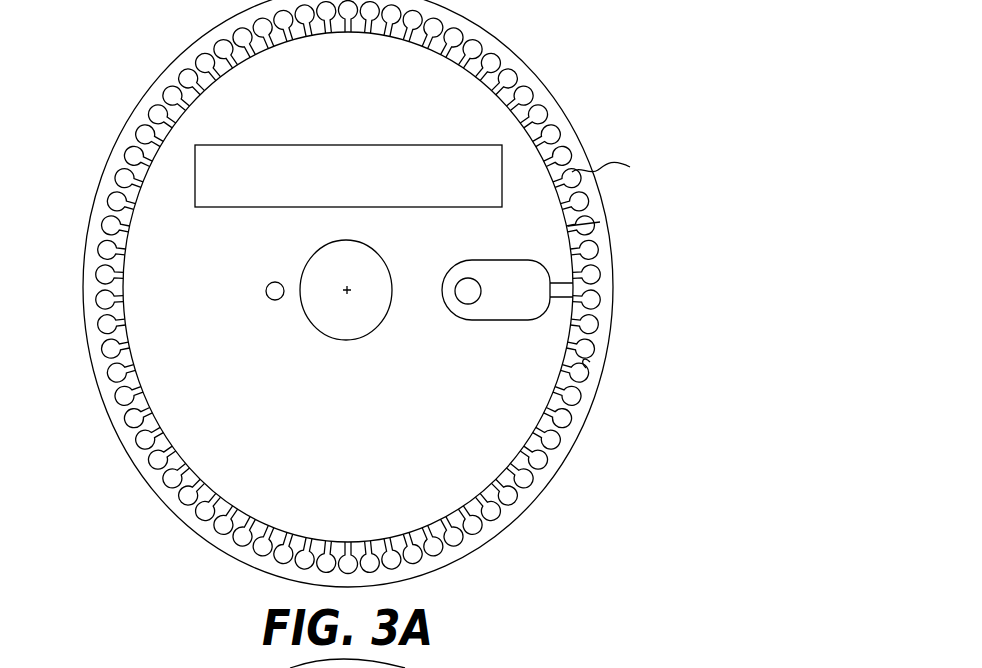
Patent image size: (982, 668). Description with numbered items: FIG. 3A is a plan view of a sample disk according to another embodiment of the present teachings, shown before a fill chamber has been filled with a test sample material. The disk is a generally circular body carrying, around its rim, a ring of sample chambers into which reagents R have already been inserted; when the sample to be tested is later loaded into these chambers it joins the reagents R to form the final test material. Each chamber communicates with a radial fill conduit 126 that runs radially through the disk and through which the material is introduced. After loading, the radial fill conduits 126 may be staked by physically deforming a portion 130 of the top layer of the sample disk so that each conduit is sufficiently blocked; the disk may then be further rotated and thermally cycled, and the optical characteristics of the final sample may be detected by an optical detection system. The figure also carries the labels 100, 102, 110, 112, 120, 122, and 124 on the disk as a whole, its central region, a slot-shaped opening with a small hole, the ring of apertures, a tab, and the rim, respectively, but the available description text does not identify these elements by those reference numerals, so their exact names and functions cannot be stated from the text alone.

The disc 100 is at (587, 103).
The reagents R is at (610, 165).
The central hub opening 102 is at (352, 297).
The slot 110 is at (520, 307).
The hole 112 is at (466, 292).
The keyhole apertures 120 is at (507, 503).
The tab 122 is at (562, 282).
The outer rim 124 is at (600, 222).
The radial fill conduit 126 is at (590, 362).
The portion of the top layer 130 is at (277, 155).